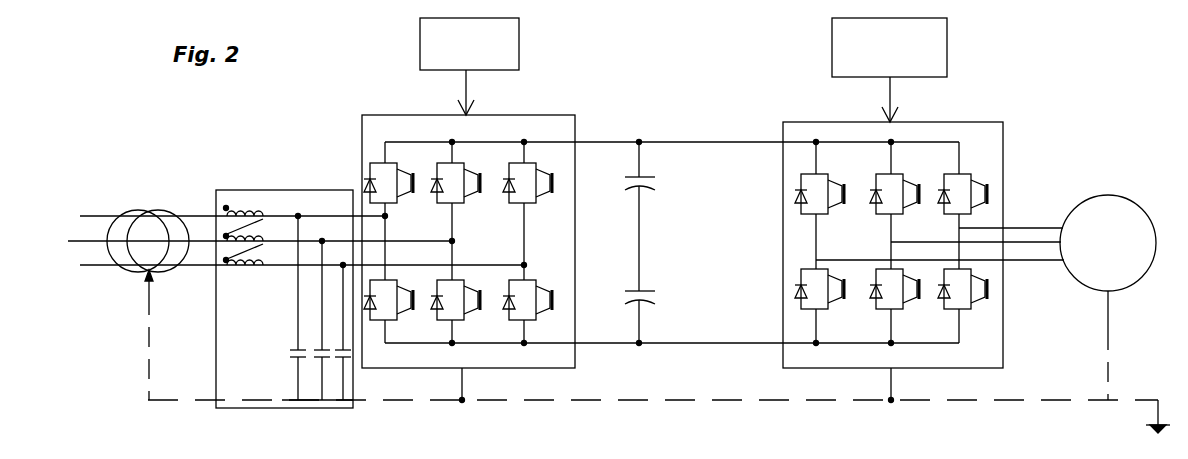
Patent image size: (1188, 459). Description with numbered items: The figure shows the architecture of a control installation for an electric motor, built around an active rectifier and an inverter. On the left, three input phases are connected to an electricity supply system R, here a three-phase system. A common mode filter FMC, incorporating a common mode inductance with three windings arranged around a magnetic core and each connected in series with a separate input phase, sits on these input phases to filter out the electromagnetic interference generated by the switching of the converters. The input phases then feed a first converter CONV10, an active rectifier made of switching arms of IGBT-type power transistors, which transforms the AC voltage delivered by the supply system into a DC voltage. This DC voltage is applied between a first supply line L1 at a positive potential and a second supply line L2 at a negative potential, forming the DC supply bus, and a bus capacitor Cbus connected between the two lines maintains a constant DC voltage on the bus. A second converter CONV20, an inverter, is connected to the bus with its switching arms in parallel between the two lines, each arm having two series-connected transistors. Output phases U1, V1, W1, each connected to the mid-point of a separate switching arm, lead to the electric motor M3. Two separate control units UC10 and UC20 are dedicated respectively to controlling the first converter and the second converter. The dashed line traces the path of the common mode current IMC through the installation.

The electricity supply system R is at (150, 209).
The common mode filter FMC is at (318, 190).
The common mode current IMC is at (161, 335).
The first converter CONV10 is at (378, 115).
The control unit UC10 is at (469, 66).
The first supply line L1 is at (727, 142).
The second supply line L2 is at (695, 343).
The bus capacitor Cbus is at (662, 199).
The control unit UC20 is at (889, 70).
The second converter CONV20 is at (977, 122).
The output phase U1 is at (1020, 228).
The output phase V1 is at (1048, 242).
The output phase W1 is at (1034, 262).
The electric motor M3 is at (1108, 297).